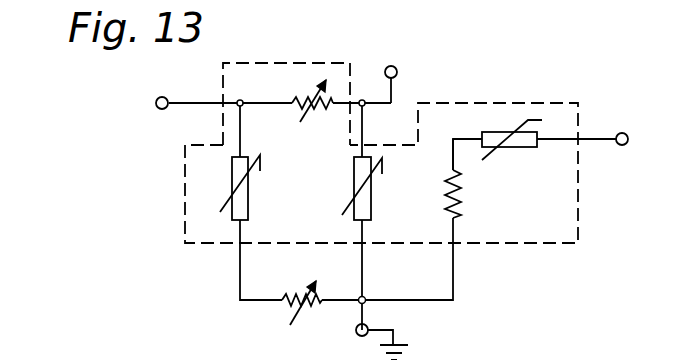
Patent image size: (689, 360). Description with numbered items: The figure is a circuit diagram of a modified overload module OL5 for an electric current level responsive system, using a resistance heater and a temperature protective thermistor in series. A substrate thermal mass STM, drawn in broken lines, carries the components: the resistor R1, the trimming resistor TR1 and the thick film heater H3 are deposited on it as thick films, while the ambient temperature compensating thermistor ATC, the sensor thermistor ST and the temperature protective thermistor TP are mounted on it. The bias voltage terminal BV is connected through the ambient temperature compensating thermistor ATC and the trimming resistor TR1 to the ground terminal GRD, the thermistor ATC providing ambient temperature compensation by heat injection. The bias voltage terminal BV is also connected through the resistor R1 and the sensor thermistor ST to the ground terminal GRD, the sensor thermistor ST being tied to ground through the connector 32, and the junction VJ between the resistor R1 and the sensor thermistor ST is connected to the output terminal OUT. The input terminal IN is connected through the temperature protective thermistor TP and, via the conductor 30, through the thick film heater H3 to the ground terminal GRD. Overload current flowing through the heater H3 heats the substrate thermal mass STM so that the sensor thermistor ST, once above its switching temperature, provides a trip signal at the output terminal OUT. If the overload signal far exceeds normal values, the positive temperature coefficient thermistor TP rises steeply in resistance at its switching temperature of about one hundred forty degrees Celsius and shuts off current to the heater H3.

The bias voltage terminal BV is at (155, 103).
The resistor R1 is at (300, 112).
The junction VJ is at (366, 108).
The output terminal OUT is at (411, 83).
The overload module OL5 is at (531, 64).
The temperature protective thermistor TP is at (488, 126).
The input terminal IN is at (630, 122).
The substrate thermal mass STM is at (180, 160).
The ambient temperature compensating thermistor ATC is at (232, 181).
The sensor thermistor ST is at (352, 180).
The conductor 30 is at (451, 152).
The thick film heater H3 is at (466, 192).
The trimming resistor TR1 is at (300, 282).
The connector 32 is at (365, 269).
The ground terminal GRD is at (355, 331).